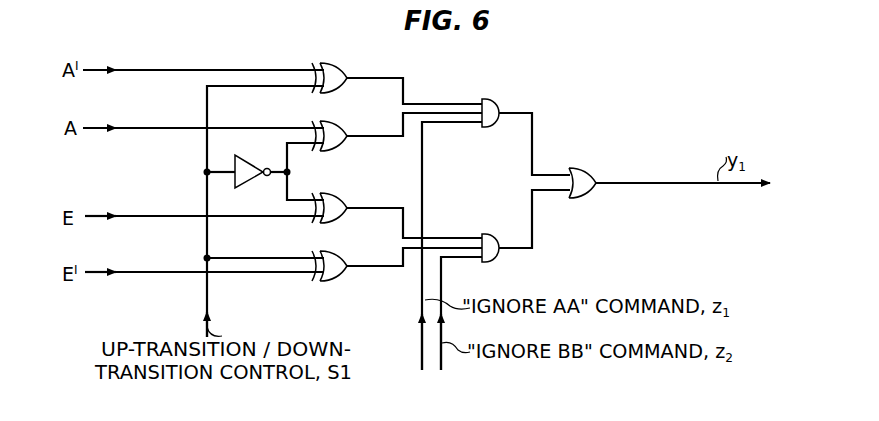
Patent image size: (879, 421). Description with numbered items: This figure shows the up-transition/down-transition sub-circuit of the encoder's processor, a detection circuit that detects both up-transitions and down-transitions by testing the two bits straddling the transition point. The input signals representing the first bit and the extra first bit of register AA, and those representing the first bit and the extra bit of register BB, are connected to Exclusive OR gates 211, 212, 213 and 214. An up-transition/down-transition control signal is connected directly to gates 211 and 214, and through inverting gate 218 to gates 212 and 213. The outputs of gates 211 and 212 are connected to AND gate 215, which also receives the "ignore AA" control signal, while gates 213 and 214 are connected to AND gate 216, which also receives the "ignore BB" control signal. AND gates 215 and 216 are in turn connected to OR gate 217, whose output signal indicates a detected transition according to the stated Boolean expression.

The Exclusive OR gate 211 is at (329, 66).
The Exclusive OR gate 212 is at (329, 124).
The Exclusive OR gate 213 is at (329, 197).
The Exclusive OR gate 214 is at (329, 255).
The AND gate 215 is at (485, 103).
The AND gate 216 is at (487, 236).
The OR gate 217 is at (579, 171).
The inverting gate 218 is at (253, 161).